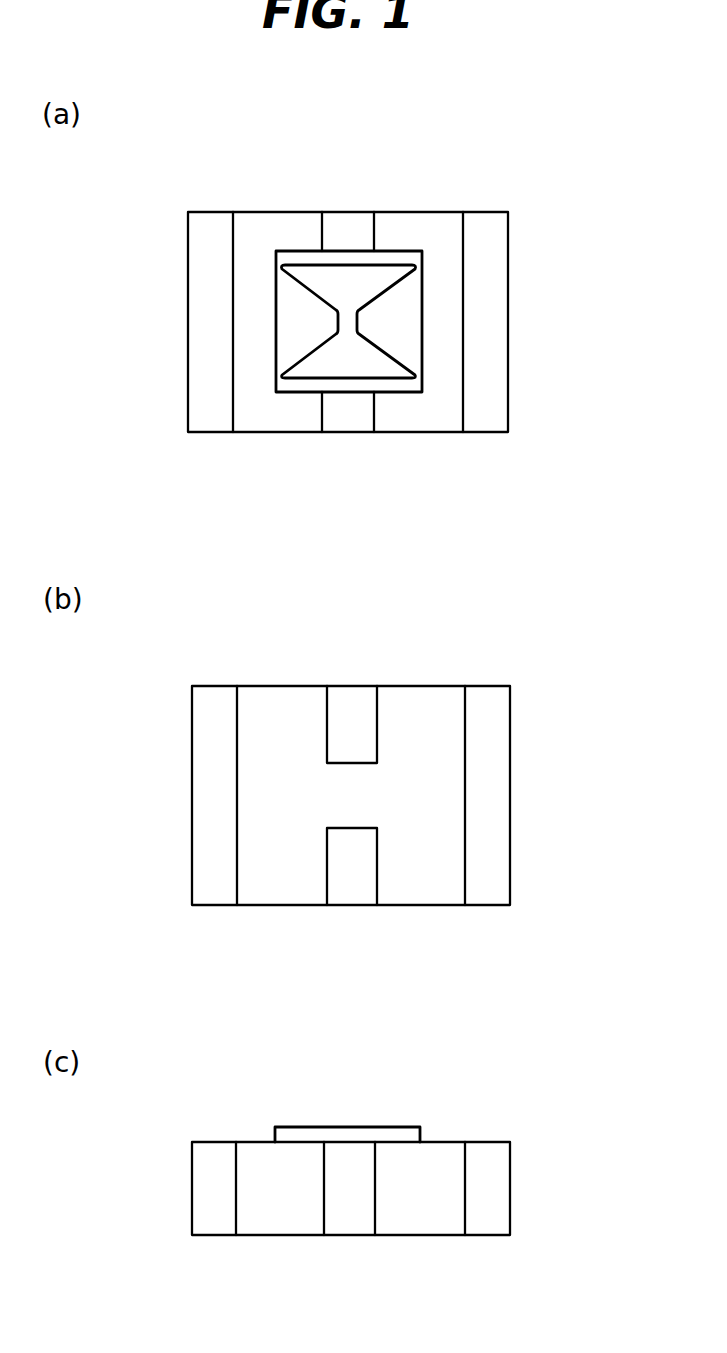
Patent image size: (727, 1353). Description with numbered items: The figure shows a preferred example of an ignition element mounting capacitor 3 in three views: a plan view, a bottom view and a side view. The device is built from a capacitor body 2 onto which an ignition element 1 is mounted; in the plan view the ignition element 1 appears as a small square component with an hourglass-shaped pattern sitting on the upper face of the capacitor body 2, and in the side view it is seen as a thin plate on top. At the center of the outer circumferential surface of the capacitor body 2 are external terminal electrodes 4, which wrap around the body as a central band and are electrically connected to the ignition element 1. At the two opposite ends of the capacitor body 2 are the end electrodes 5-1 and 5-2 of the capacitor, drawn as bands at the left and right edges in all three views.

The ignition element 1 is at (350, 275).
The capacitor body 2 is at (276, 210).
The ignition element mounting capacitor 3 is at (413, 196).
The external terminal electrodes 4 is at (347, 413).
The end electrode of capacitor 5-1 is at (207, 287).
The end electrode of capacitor 5-2 is at (490, 280).